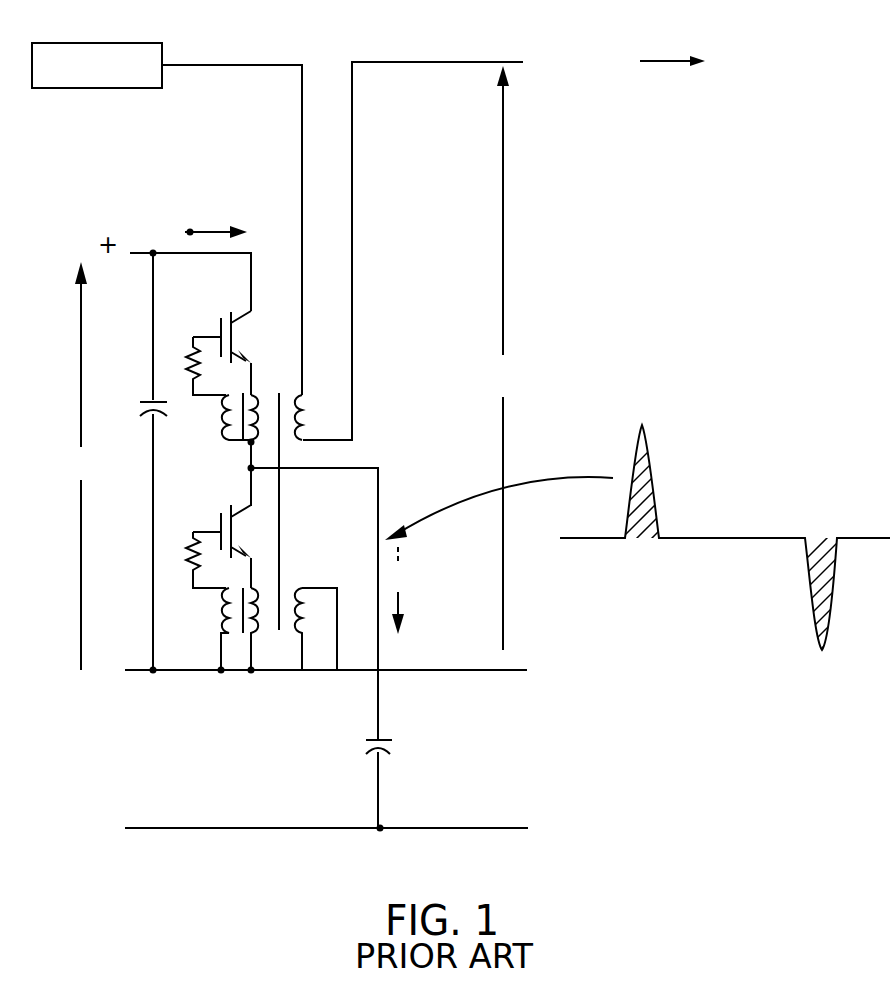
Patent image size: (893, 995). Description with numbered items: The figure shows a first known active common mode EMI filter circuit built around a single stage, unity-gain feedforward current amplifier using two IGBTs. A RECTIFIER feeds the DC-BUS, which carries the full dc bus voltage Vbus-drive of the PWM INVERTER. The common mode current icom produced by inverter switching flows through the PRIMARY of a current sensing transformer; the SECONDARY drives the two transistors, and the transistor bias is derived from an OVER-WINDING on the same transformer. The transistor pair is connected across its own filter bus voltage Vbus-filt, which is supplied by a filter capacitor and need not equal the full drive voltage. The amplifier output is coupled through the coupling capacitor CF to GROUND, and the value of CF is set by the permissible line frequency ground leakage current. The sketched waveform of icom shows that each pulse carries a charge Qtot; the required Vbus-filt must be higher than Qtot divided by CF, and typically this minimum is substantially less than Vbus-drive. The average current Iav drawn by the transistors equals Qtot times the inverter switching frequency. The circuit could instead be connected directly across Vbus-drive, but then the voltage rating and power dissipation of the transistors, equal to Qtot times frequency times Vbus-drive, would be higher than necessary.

The rectifier RECTIFIER is at (97, 65).
The dc bus DC-BUS is at (373, 224).
The PWM inverter INVERTER is at (734, 62).
The Vbus drive Vbus-drive is at (506, 358).
The Vbus filt Vbus-filt is at (107, 461).
The average current Iav is at (140, 205).
The overwinding OVER-WINDING is at (218, 612).
The secondary winding SECONDARY is at (243, 635).
The primary winding PRIMARY is at (293, 635).
The common mode current icom is at (346, 604).
The coupling capacitor CF is at (395, 782).
The ground GROUND is at (326, 845).
The charge Qtot is at (645, 490).